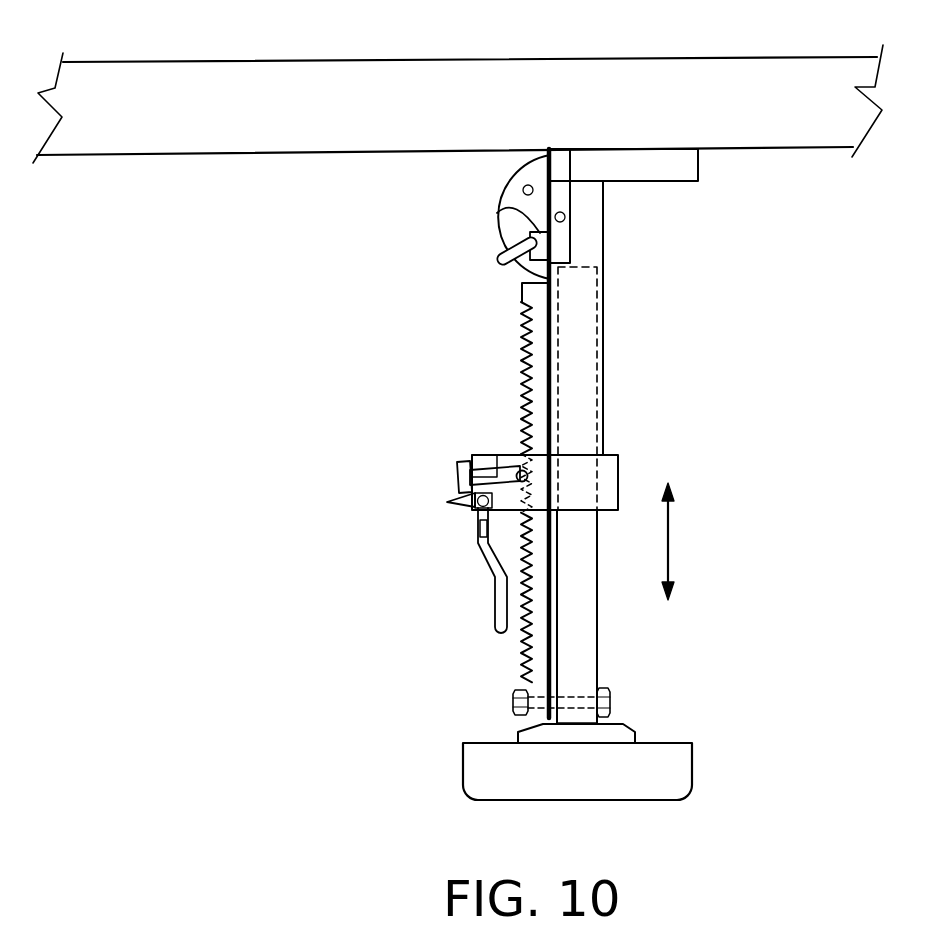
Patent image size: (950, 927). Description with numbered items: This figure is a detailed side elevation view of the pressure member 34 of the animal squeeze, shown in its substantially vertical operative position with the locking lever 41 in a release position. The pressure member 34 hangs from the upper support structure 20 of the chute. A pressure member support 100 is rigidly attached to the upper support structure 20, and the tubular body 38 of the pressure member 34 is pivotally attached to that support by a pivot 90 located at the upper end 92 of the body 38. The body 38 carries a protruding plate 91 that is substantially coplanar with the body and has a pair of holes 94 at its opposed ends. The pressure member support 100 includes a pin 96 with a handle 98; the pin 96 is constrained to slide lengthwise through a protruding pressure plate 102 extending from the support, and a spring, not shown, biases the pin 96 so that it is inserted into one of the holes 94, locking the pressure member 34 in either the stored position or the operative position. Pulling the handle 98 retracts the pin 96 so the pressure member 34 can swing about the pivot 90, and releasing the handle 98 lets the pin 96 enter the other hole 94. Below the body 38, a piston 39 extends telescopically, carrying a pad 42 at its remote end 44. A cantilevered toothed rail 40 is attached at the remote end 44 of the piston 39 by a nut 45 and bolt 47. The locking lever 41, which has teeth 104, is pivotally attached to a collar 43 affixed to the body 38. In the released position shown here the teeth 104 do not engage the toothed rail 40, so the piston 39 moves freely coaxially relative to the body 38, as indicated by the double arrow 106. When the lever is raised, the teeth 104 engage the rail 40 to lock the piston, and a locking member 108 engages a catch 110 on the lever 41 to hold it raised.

The upper support structure 20 is at (248, 61).
The pressure member 34 is at (383, 373).
The tubular body 38 is at (604, 255).
The piston 39 is at (604, 428).
The cantilevered toothed rail 40 is at (522, 393).
The locking lever 41 is at (496, 583).
The pad 42 is at (668, 773).
The collar 43 is at (619, 475).
The remote end 44 is at (605, 722).
The nut 45 is at (603, 687).
The bolt 47 is at (513, 702).
The pivot 90 is at (563, 212).
The protruding plate 91 is at (500, 224).
The upper end 92 is at (604, 185).
The holes 94 is at (527, 185).
The pin 96 is at (530, 267).
The handle 98 is at (499, 263).
The pressure member support 100 is at (574, 228).
The protruding pressure plate 102 is at (500, 210).
The teeth 104 is at (448, 501).
The double arrow 106 is at (669, 553).
The locking member 108 is at (460, 472).
The catch 110 is at (479, 527).